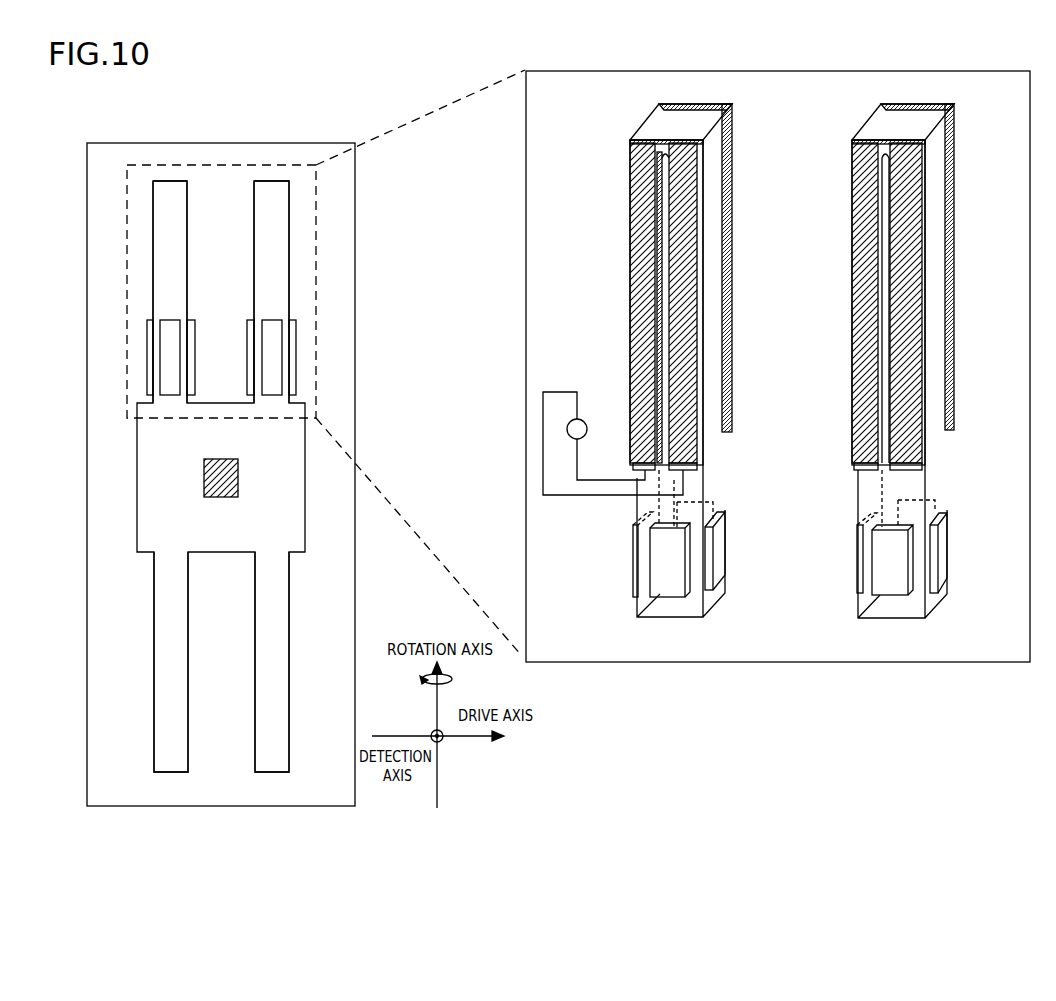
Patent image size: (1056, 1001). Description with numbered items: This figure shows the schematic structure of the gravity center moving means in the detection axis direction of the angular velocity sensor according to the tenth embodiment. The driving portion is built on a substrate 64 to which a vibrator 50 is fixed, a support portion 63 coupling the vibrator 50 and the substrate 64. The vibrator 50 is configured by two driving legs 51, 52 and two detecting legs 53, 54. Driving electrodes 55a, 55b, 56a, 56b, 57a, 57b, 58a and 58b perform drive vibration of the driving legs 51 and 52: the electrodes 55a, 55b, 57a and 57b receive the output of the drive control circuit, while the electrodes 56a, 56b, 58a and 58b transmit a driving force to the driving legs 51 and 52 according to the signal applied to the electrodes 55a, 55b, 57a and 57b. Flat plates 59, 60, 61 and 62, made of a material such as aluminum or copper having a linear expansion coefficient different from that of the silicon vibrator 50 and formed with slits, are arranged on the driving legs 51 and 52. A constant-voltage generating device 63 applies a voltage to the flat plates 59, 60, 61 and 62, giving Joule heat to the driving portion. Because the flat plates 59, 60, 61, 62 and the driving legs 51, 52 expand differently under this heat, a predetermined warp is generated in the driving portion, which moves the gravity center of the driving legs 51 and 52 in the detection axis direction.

The vibrator 50 is at (297, 496).
The driving leg 51 is at (169, 181).
The driving leg 52 is at (273, 181).
The detecting leg 53 is at (160, 738).
The detecting leg 54 is at (280, 738).
The driving electrode 55a is at (165, 322).
The driving electrode 55b is at (713, 500).
The driving electrode 56a is at (147, 357).
The driving electrode 56b is at (195, 370).
The driving electrode 57a is at (272, 322).
The driving electrode 57b is at (935, 500).
The driving electrode 58a is at (250, 322).
The driving electrode 58b is at (296, 357).
The flat plate 59 is at (634, 285).
The flat plate 60 is at (725, 120).
The flat plate 61 is at (858, 286).
The flat plate 62 is at (950, 122).
The constant-voltage generating device 63 is at (240, 475).
The substrate 64 is at (332, 682).